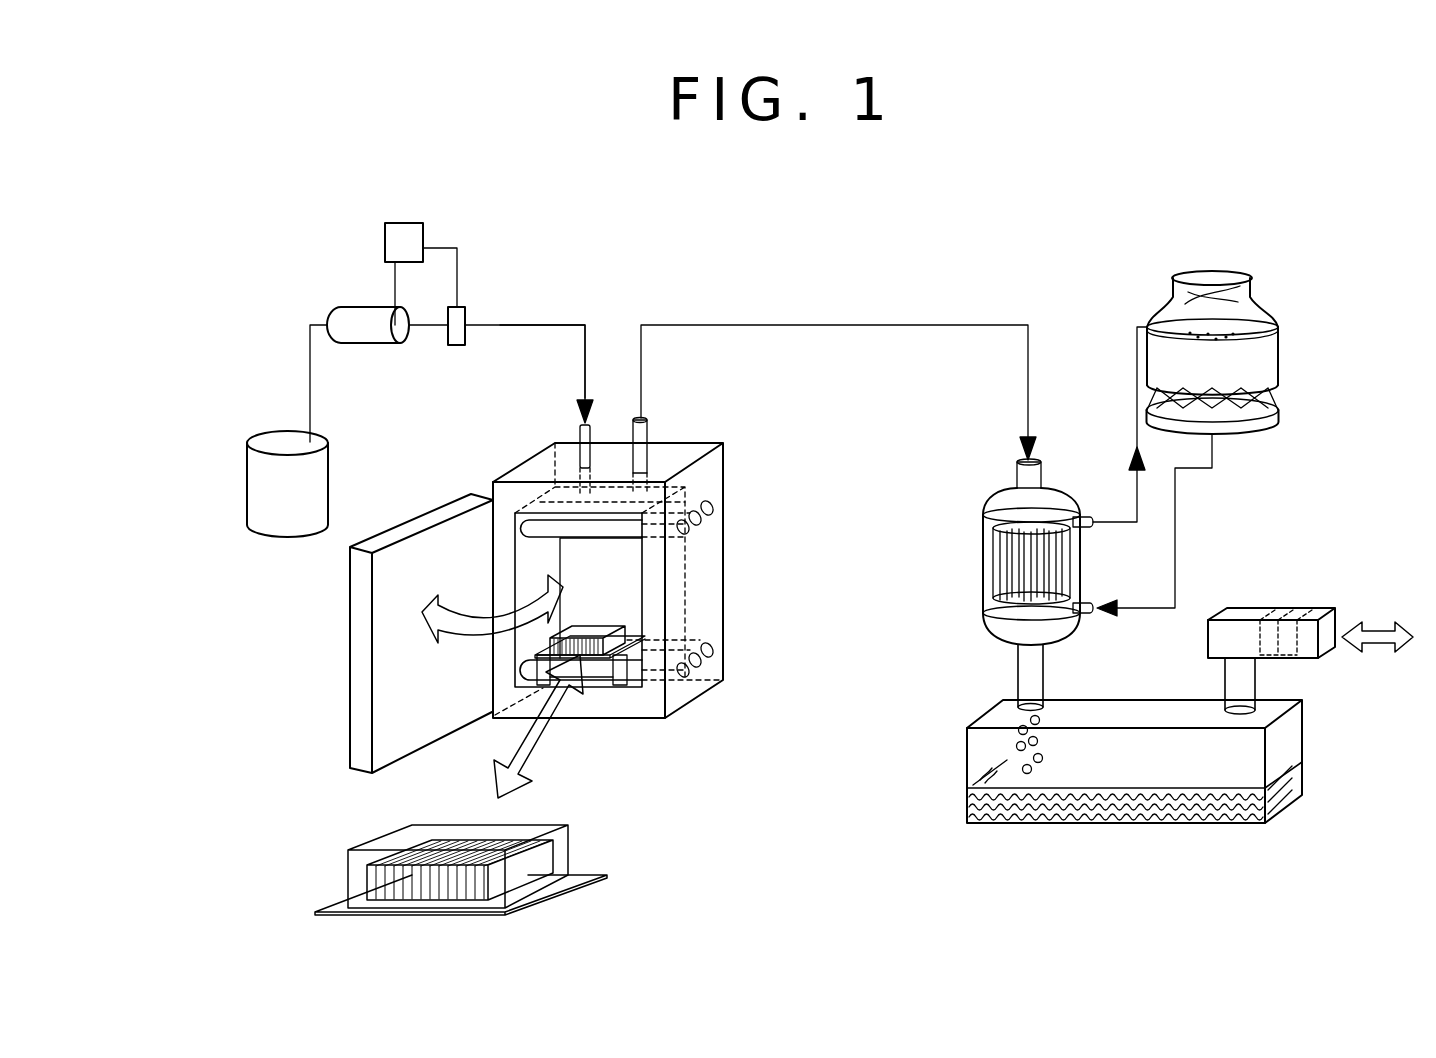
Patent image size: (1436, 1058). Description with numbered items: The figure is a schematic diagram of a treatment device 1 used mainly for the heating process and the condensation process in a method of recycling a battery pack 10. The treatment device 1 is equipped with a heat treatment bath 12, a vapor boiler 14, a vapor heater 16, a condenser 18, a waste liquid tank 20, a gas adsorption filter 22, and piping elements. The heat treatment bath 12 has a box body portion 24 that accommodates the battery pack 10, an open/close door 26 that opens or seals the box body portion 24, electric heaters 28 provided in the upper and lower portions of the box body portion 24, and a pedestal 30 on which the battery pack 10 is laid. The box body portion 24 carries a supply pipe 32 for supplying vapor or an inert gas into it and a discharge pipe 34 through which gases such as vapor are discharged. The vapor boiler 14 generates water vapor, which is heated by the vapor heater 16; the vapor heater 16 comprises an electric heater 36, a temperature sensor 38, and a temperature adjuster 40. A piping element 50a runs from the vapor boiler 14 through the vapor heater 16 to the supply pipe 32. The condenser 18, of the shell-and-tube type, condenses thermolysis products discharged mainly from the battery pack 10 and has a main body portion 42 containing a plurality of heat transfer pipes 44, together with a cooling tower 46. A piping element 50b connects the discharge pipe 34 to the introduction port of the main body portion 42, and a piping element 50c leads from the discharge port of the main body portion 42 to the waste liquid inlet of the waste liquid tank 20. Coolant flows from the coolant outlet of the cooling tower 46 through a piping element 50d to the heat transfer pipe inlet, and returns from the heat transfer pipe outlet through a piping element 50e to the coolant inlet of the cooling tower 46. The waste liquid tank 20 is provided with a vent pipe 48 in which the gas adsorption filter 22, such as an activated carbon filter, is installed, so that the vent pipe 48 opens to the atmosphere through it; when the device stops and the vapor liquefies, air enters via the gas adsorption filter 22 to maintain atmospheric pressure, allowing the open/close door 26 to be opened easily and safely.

The treatment device 1 is at (736, 256).
The battery pack 10 is at (568, 858).
The heat treatment bath 12 is at (748, 468).
The vapor boiler 14 is at (257, 433).
The vapor heater 16 is at (336, 234).
The condenser 18 is at (1068, 340).
The waste liquid tank 20 is at (967, 765).
The gas adsorption filter 22 is at (1293, 617).
The box body portion 24 is at (727, 533).
The open/close door 26 is at (348, 640).
The electric heaters 28 is at (713, 650).
The pedestal 30 is at (623, 670).
The supply pipe 32 is at (578, 433).
The discharge pipe 34 is at (653, 427).
The electric heater 36 is at (330, 308).
The temperature sensor 38 is at (467, 308).
The temperature adjuster 40 is at (418, 223).
The main body portion 42 is at (993, 493).
The heat transfer pipes 44 is at (993, 570).
The cooling tower 46 is at (1233, 268).
The vent pipe 48 is at (1217, 642).
The piping element 50a is at (545, 323).
The piping element 50b is at (800, 325).
The piping element 50c is at (1017, 673).
The piping element 50d is at (1175, 520).
The piping element 50e is at (1133, 397).